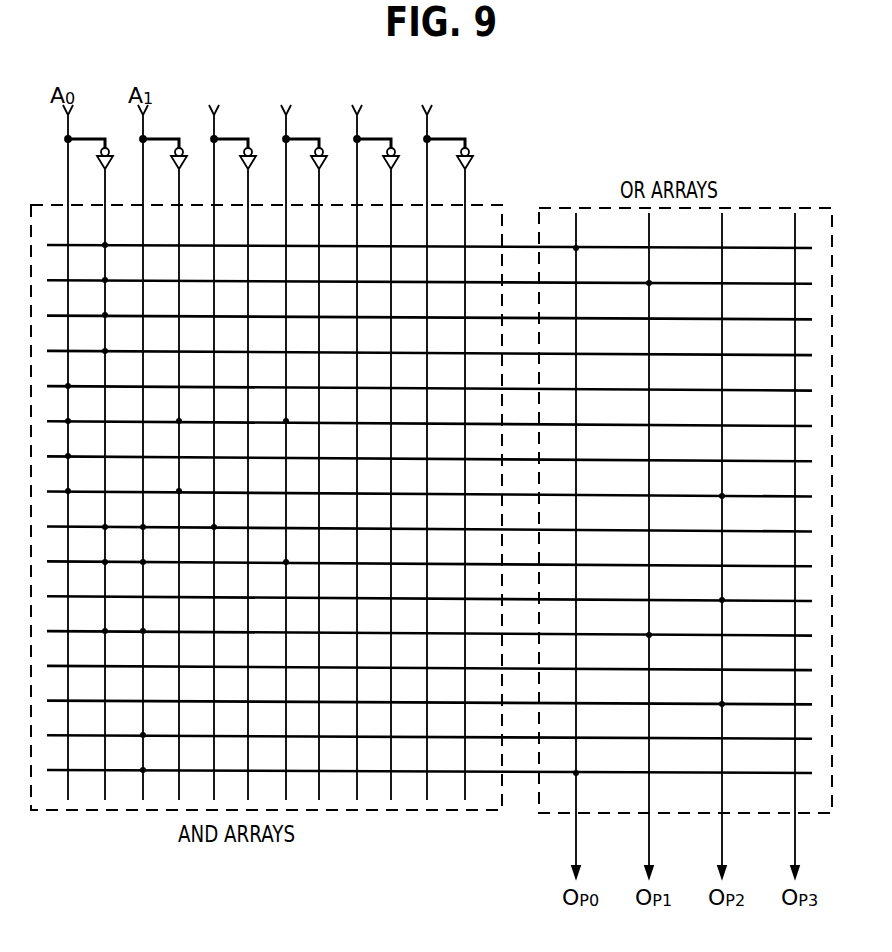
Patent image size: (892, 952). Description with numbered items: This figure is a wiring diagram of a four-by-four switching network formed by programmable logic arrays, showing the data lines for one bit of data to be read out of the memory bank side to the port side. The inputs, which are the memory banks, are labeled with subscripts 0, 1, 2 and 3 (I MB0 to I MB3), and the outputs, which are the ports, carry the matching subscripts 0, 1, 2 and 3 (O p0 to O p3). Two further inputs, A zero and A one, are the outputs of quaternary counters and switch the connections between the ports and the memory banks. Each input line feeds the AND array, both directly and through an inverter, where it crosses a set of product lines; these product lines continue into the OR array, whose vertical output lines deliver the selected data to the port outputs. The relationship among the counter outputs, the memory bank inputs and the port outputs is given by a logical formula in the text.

The IMB0 input line with inverter 0 is at (227, 442).
The IMB1 input line with inverter 1 is at (299, 442).
The IMB2 input line with inverter 2 is at (369, 442).
The IMB3 input line with inverter 3 is at (442, 442).